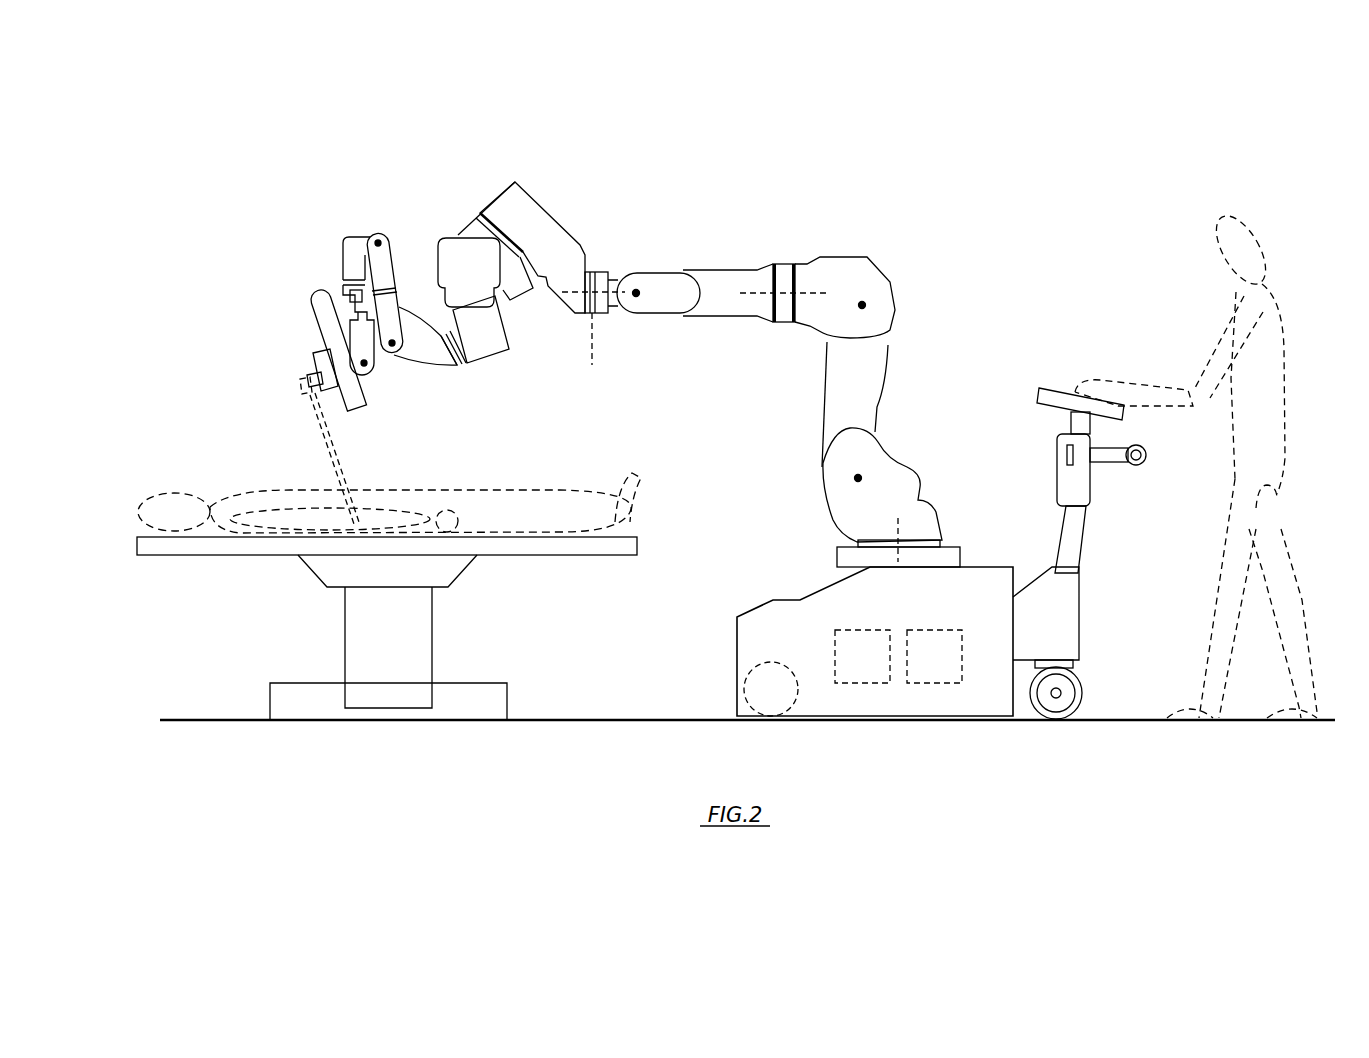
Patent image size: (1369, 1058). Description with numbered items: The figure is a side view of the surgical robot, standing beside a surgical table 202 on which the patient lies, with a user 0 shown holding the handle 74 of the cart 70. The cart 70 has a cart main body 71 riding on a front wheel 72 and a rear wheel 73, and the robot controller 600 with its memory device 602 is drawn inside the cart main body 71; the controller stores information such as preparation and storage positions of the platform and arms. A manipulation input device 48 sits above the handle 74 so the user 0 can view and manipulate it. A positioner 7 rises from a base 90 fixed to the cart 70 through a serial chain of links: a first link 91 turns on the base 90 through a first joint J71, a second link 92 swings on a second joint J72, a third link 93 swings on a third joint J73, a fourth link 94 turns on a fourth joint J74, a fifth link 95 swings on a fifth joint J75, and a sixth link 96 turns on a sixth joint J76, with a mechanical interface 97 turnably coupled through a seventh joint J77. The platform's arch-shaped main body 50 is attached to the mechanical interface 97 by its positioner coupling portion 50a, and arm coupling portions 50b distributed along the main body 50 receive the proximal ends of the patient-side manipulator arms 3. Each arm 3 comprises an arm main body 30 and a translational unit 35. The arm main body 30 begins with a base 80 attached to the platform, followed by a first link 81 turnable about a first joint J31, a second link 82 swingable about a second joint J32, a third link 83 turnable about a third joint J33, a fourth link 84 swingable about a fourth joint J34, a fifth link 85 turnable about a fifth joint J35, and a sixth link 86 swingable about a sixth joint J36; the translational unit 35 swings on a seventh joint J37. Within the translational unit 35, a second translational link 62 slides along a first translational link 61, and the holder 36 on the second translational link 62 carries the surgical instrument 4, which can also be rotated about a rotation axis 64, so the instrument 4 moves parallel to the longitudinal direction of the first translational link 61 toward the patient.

The user 0 is at (1236, 212).
The patient-side manipulator arm 3 is at (355, 154).
The surgical instrument 4 is at (312, 410).
The positioner 7 is at (889, 180).
The arm main body 30 is at (328, 226).
The translational unit 35 is at (298, 331).
The holder 36 is at (313, 378).
The manipulation input device 48 is at (1050, 388).
The main body 50 is at (490, 297).
The positioner coupling portion 50a is at (460, 232).
The arm coupling portion 50b is at (498, 350).
The first translational link 61 is at (310, 312).
The second translational link 62 is at (313, 360).
The rotation axis 64 is at (302, 379).
The cart 70 is at (914, 538).
The cart main body 71 is at (775, 598).
The front wheel 72 is at (745, 682).
The rear wheel 73 is at (1083, 683).
The handle 74 is at (1138, 466).
The base 80 is at (457, 346).
The first link 81 is at (440, 350).
The second link 82 is at (402, 330).
The third link 83 is at (387, 253).
The fourth link 84 is at (352, 234).
The fifth link 85 is at (343, 283).
The sixth link 86 is at (374, 375).
The base 90 is at (962, 555).
The first link 91 is at (918, 482).
The second link 92 is at (877, 403).
The third link 93 is at (885, 268).
The fourth link 94 is at (727, 268).
The fifth link 95 is at (603, 272).
The sixth link 96 is at (518, 178).
The mechanical interface 97 is at (472, 232).
The surgical table 202 is at (543, 557).
The robot controller 600 is at (858, 685).
The memory device 602 is at (932, 685).
The first joint J31 is at (447, 348).
The second joint J32 is at (395, 350).
The third joint J33 is at (397, 275).
The fourth joint J34 is at (375, 230).
The fifth joint J35 is at (343, 265).
The sixth joint J36 is at (355, 300).
The seventh joint J37 is at (367, 373).
The first joint J71 is at (900, 528).
The second joint J72 is at (850, 477).
The third joint J73 is at (870, 308).
The fourth joint J74 is at (792, 283).
The fifth joint J75 is at (639, 288).
The sixth joint J76 is at (589, 355).
The seventh joint J77 is at (507, 225).